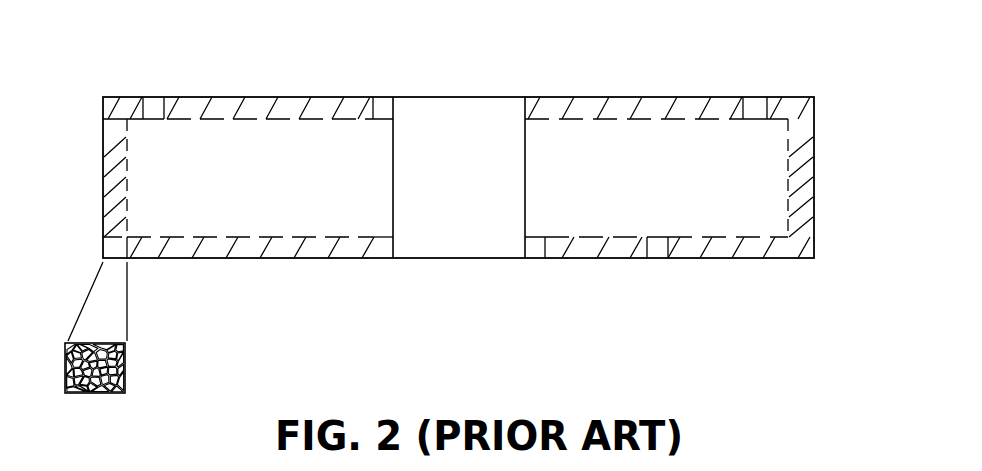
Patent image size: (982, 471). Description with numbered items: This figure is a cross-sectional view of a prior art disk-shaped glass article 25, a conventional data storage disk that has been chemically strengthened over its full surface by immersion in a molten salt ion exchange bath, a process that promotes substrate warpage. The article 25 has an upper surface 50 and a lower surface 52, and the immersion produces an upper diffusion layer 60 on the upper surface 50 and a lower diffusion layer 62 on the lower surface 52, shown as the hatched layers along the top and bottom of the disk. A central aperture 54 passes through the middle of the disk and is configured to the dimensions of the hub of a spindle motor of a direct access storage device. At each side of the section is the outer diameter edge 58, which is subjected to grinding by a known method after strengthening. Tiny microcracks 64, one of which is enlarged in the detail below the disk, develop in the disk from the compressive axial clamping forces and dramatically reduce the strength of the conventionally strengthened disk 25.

The disk-shaped glass article 25 is at (830, 84).
The upper surface 50 is at (633, 97).
The lower surface 52 is at (575, 258).
The central aperture 54 is at (447, 96).
The outer diameter edge 58 is at (103, 161).
The upper diffusion layer 60 is at (253, 112).
The lower diffusion layer 62 is at (252, 258).
The microcracks 64 is at (151, 105).